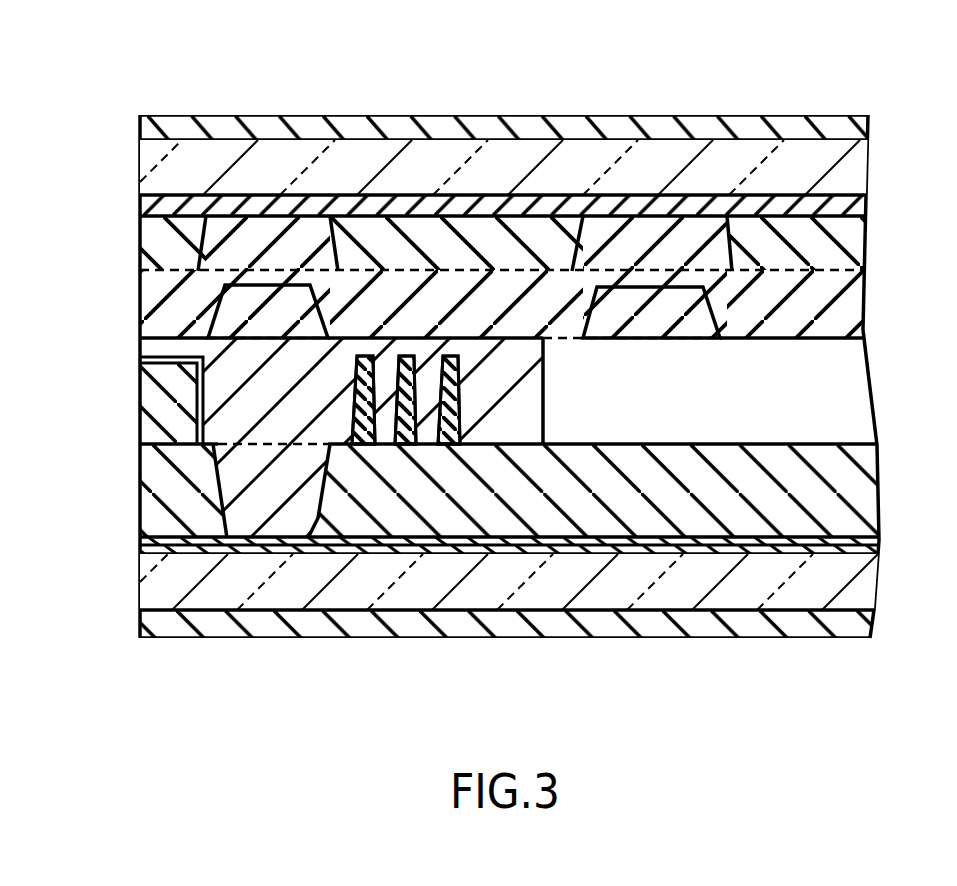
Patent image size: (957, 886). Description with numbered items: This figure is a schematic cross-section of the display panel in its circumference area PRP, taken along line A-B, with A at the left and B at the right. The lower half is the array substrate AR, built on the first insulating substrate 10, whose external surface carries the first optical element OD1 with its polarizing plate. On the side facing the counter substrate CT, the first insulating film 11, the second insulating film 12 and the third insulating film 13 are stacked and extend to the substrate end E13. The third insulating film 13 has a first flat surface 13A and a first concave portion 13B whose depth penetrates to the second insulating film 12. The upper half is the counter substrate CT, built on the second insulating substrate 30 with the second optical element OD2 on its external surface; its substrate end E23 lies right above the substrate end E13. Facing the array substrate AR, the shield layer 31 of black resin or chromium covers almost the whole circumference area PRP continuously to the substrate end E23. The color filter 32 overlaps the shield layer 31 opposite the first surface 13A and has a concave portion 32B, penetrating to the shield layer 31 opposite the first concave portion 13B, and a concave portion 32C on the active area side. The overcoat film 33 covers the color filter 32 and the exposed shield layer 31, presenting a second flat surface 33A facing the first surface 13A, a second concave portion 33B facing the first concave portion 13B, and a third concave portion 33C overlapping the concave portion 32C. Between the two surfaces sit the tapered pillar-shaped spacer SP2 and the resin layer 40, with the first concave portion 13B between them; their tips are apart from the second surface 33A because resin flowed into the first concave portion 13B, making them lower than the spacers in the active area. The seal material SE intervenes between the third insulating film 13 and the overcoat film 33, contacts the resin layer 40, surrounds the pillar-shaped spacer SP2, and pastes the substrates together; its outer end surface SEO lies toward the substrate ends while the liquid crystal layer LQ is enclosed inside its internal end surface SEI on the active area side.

The first insulating substrate 10 is at (858, 585).
The first insulating film 11 is at (865, 556).
The second insulating film 12 is at (865, 535).
The third insulating film 13 is at (860, 460).
The first flat surface 13A is at (503, 433).
The first concave portion 13B is at (258, 440).
The second insulating substrate 30 is at (850, 176).
The shield layer 31 is at (850, 201).
The color filter 32 is at (850, 240).
The concave portion 32B is at (215, 262).
The concave portion 32C is at (670, 262).
The overcoat film 33 is at (850, 310).
The second flat surface 33A is at (520, 346).
The second concave portion 33B is at (262, 335).
The third concave portion 33C is at (699, 335).
The resin layer 40 is at (140, 393).
The first optical element OD1 is at (860, 625).
The second optical element OD2 is at (862, 122).
The counter substrate CT is at (508, 248).
The array substrate AR is at (521, 541).
The liquid crystal layer LQ is at (855, 400).
The seal material SE is at (278, 525).
The outer end surface SEO is at (126, 347).
The internal end surface SEI is at (555, 398).
The pillar-shaped spacer SP2 is at (374, 367).
The circumference area PRP is at (880, 77).
The substrate end E13 is at (126, 599).
The substrate end E23 is at (126, 172).
The line A-B A is at (144, 683).
The line A- B is at (877, 674).